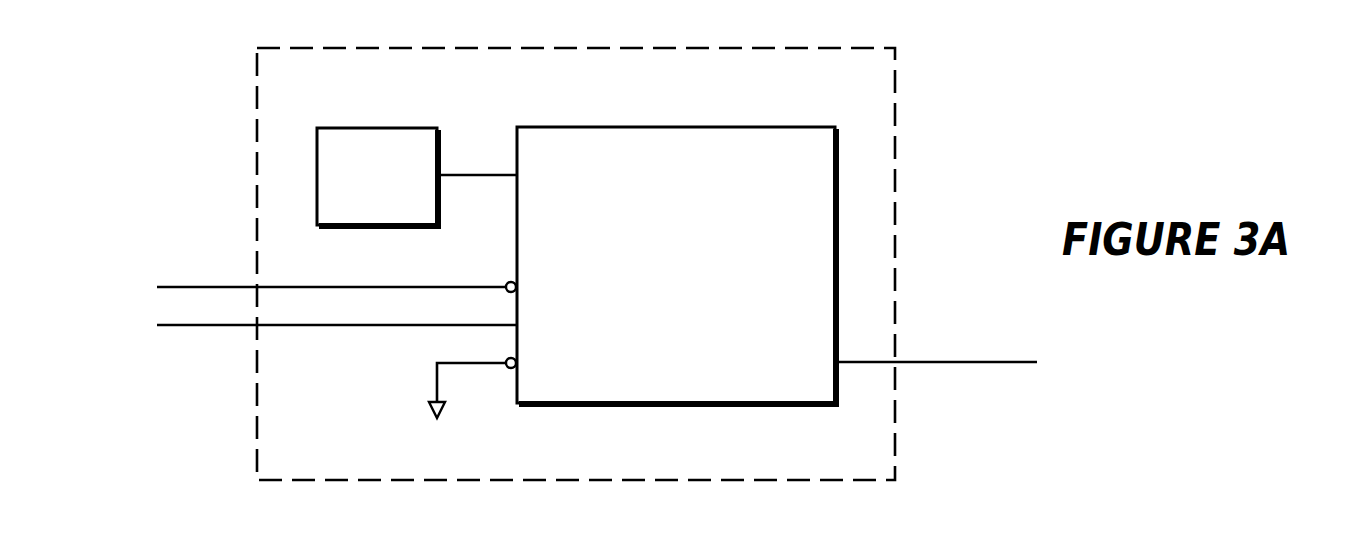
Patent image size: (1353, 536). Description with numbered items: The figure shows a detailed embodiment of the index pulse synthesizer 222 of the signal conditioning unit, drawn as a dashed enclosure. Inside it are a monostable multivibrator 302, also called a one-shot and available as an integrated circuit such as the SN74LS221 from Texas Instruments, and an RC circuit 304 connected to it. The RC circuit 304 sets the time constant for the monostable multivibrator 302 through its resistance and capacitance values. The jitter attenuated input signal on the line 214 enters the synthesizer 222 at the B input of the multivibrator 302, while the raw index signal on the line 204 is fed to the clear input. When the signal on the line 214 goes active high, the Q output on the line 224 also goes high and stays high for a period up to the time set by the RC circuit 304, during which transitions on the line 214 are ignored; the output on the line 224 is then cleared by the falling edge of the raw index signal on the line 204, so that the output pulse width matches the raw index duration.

The raw index signal line 204 is at (200, 288).
The jitter attenuated input signal line 214 is at (200, 327).
The index pulse synthesizer 222 is at (900, 140).
The Q output line 224 is at (935, 360).
The monostable multivibrator 302 is at (635, 125).
The RC circuit 304 is at (357, 128).